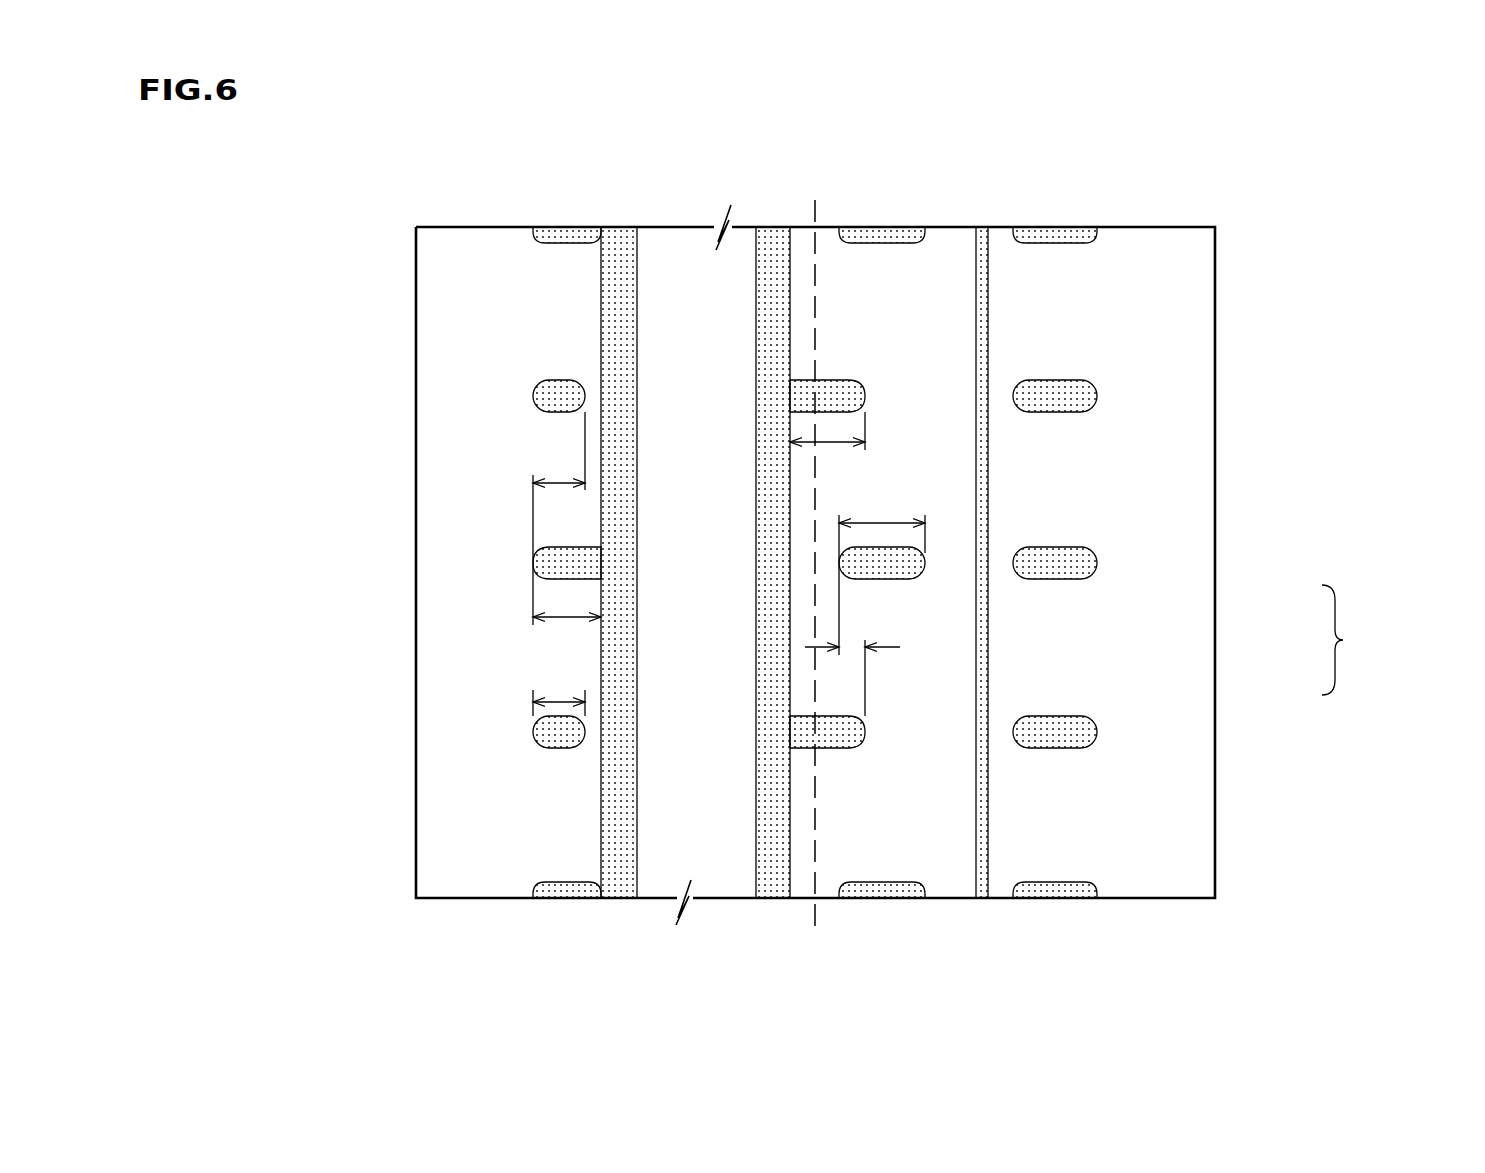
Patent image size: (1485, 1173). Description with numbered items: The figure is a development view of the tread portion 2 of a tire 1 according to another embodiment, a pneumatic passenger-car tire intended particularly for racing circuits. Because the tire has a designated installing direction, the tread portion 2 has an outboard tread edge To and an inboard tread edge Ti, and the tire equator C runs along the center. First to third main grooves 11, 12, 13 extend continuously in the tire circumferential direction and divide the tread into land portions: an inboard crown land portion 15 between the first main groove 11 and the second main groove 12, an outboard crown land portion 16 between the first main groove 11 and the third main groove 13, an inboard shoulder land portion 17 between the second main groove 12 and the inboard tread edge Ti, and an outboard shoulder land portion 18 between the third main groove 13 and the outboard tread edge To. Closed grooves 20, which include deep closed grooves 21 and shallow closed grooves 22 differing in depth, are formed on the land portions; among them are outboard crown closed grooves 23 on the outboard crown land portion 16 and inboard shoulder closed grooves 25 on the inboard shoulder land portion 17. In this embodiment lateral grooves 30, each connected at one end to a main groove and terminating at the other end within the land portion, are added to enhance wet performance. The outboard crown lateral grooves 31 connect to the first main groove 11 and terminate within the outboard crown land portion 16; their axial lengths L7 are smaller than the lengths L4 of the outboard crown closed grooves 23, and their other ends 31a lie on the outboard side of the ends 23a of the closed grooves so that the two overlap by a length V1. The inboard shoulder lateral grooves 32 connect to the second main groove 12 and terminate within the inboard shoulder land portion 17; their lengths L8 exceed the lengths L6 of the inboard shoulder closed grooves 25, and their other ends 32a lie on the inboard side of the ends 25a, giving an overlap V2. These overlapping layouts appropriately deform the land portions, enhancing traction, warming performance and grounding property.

The tire 1 is at (1184, 210).
The tread portion 2 is at (940, 222).
The first main groove 11 is at (774, 282).
The second main groove 12 is at (621, 282).
The third main groove 13 is at (984, 275).
The inboard crown land portion 15 is at (689, 282).
The outboard crown land portion 16 is at (892, 282).
The inboard shoulder land portion 17 is at (494, 282).
The outboard shoulder land portion 18 is at (1121, 282).
The closed grooves 20 is at (1376, 640).
The deep closed grooves 21 is at (1076, 735).
The shallow closed grooves 22 is at (1076, 563).
The outboard crown closed grooves 23 is at (1076, 397).
The ends of the outboard crown closed grooves 23a is at (839, 563).
The inboard shoulder closed grooves 25 is at (556, 397).
The ends of the inboard shoulder closed grooves 25a is at (585, 393).
The lateral grooves 30 is at (568, 562).
The outboard crown lateral grooves 31 is at (834, 394).
The other ends of the outboard crown lateral grooves 31a is at (866, 737).
The inboard shoulder lateral grooves 32 is at (566, 563).
The other ends of the inboard shoulder lateral grooves 32a is at (541, 561).
The inboard tread edge Ti is at (416, 272).
The outboard tread edge To is at (1215, 272).
The tire equator C is at (815, 546).
The lengths of the outboard crown closed grooves L4 is at (882, 572).
The lengths of the inboard shoulder closed grooves L6 is at (559, 691).
The lengths of the outboard crown lateral grooves L7 is at (827, 447).
The lengths of the inboard shoulder lateral grooves L8 is at (567, 636).
The overlapping lengths of the outboard crown lateral grooves and outboard crown clo V1 is at (853, 646).
The overlapping lengths of the inboard shoulder lateral grooves and inboard shoulder V2 is at (559, 518).